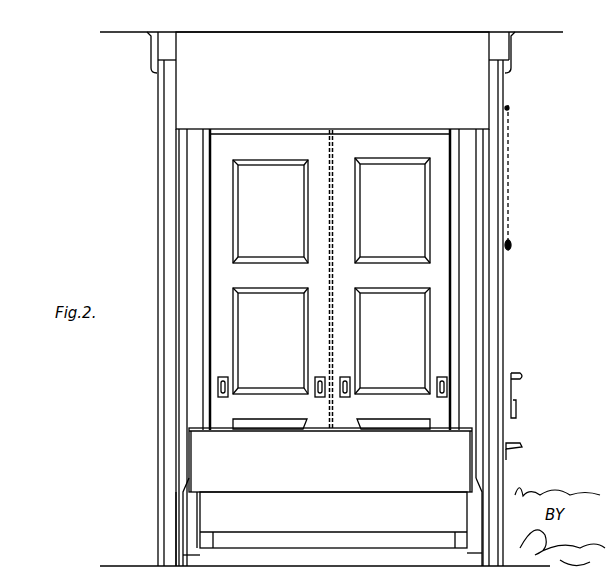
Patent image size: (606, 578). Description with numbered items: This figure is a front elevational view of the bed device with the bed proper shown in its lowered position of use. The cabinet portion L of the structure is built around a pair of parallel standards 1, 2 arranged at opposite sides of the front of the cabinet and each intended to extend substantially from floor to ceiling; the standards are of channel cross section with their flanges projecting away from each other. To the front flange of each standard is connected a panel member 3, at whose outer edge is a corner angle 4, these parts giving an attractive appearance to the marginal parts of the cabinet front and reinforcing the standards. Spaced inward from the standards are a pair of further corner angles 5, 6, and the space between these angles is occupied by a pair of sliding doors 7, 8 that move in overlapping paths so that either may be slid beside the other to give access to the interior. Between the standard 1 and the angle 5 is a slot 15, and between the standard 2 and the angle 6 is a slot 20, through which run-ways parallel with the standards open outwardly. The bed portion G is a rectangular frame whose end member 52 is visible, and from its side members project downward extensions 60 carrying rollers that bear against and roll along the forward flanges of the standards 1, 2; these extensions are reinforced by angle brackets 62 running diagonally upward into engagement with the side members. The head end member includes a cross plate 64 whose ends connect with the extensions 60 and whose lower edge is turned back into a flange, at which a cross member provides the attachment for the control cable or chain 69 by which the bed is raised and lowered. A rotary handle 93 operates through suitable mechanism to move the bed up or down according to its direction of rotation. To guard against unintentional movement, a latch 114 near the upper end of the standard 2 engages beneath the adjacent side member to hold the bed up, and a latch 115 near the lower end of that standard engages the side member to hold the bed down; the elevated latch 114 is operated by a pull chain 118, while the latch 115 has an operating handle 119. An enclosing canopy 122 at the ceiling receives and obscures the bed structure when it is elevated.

The standard 1 is at (182, 375).
The standard 2 is at (481, 353).
The panel member 3 is at (170, 462).
The corner angle 4 is at (162, 442).
The corner angle 5 is at (222, 279).
The corner angle 6 is at (435, 279).
The sliding door 7 is at (270, 341).
The sliding door 8 is at (392, 276).
The slot 15 is at (190, 333).
The slot 20 is at (471, 334).
The end member 52 is at (330, 460).
The extension 60 is at (185, 515).
The angle bracket 62 is at (195, 555).
The cross plate 64 is at (332, 520).
The control cable or chain 69 is at (334, 280).
The rotary handle 93 is at (524, 377).
The latch 114 is at (509, 107).
The latch 115 is at (508, 452).
The pull chain 118 is at (510, 190).
The operating handle 119 is at (522, 445).
The enclosing canopy 122 is at (332, 83).
The bed portion G is at (330, 460).
The cabinet portion L is at (280, 201).